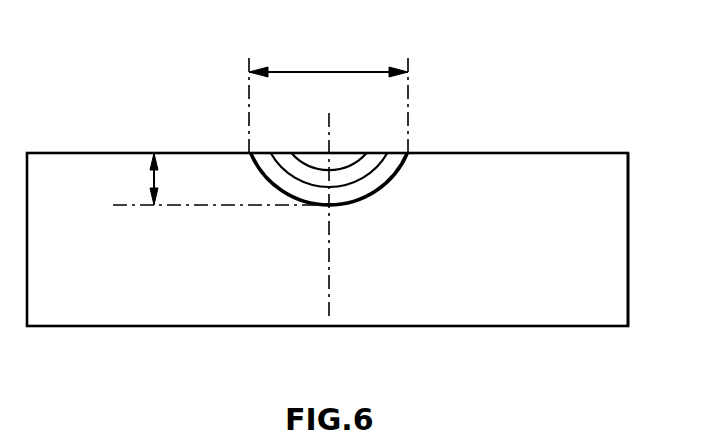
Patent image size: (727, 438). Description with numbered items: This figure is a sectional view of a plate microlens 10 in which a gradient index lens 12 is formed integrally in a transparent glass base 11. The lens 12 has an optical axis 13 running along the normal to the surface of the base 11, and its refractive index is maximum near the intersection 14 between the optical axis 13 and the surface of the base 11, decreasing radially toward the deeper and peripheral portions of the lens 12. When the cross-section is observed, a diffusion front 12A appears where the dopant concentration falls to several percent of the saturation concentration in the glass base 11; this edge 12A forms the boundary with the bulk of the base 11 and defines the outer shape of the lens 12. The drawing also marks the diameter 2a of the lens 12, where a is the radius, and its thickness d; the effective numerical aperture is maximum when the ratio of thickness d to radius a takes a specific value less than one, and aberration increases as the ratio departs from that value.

The plate microlens 10 is at (533, 153).
The transparent glass base 11 is at (609, 199).
The gradient index lens 12 is at (404, 158).
The diffusion front 12A is at (266, 181).
The optical axis 13 is at (330, 252).
The intersection 14 is at (332, 152).
The diameter of the lens 2a is at (330, 72).
The thickness of the lens d is at (150, 190).